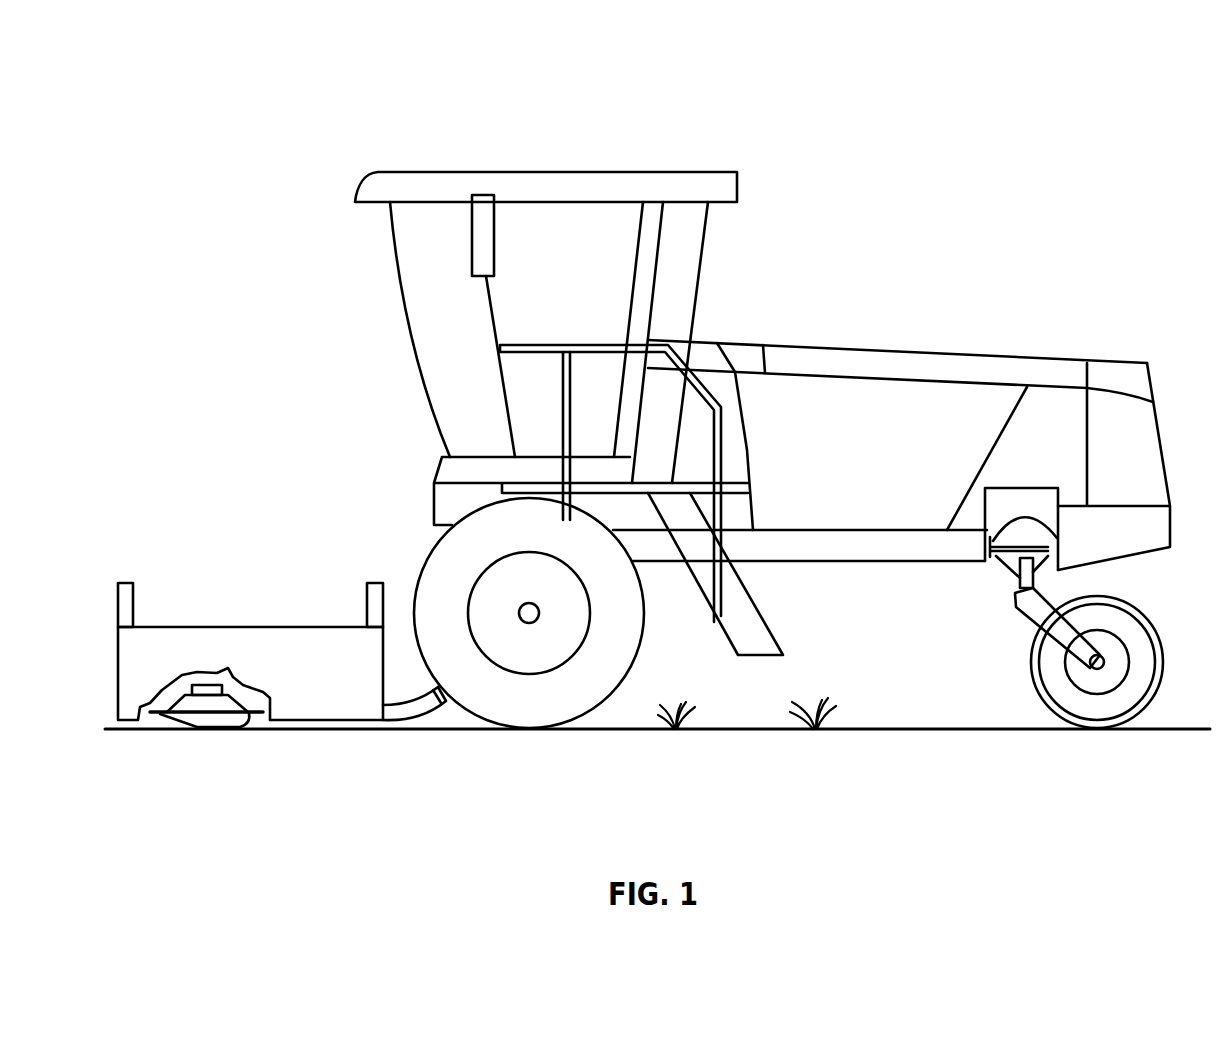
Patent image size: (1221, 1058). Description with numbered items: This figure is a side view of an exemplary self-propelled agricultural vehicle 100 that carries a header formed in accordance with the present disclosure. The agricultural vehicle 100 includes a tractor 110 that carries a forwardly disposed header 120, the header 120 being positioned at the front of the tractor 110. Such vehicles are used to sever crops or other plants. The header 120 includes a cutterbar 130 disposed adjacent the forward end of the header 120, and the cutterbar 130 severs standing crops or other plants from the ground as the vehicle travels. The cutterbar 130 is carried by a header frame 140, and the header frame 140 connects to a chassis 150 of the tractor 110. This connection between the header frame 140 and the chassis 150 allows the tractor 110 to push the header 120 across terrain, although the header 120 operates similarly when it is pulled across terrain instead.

The agricultural vehicle 100 is at (212, 76).
The tractor 110 is at (783, 341).
The header 120 is at (255, 589).
The cutterbar 130 is at (147, 724).
The header frame 140 is at (383, 668).
The chassis 150 is at (450, 527).